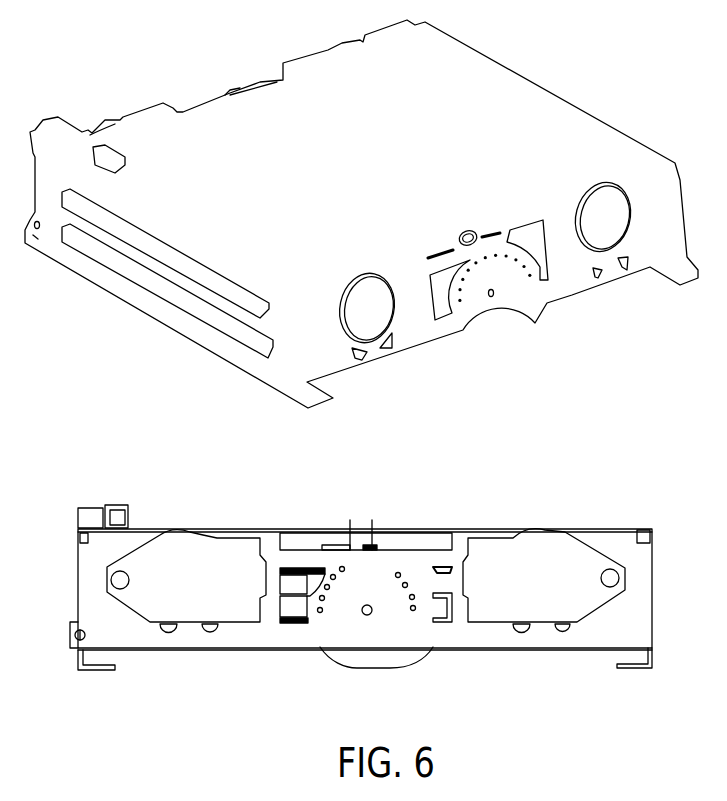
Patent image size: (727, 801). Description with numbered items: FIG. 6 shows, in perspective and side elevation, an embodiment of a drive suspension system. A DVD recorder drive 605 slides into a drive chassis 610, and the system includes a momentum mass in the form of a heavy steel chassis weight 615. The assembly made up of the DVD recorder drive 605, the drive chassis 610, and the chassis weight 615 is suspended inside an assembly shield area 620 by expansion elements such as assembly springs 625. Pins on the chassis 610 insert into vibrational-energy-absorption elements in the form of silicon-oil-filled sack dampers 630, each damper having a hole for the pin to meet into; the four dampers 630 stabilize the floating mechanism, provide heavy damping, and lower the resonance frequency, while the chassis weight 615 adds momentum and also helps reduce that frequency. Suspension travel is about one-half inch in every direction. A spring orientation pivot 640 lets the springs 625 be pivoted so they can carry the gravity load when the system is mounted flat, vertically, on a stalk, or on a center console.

The DVD recorder drive 605 is at (235, 313).
The drive chassis 610 is at (298, 567).
The chassis weight 615 is at (442, 562).
The assembly shield area 620 is at (475, 648).
The assembly springs 625 is at (553, 100).
The silicon-oil-filled sack dampers 630 is at (386, 347).
The spring orientation pivot 640 is at (403, 652).